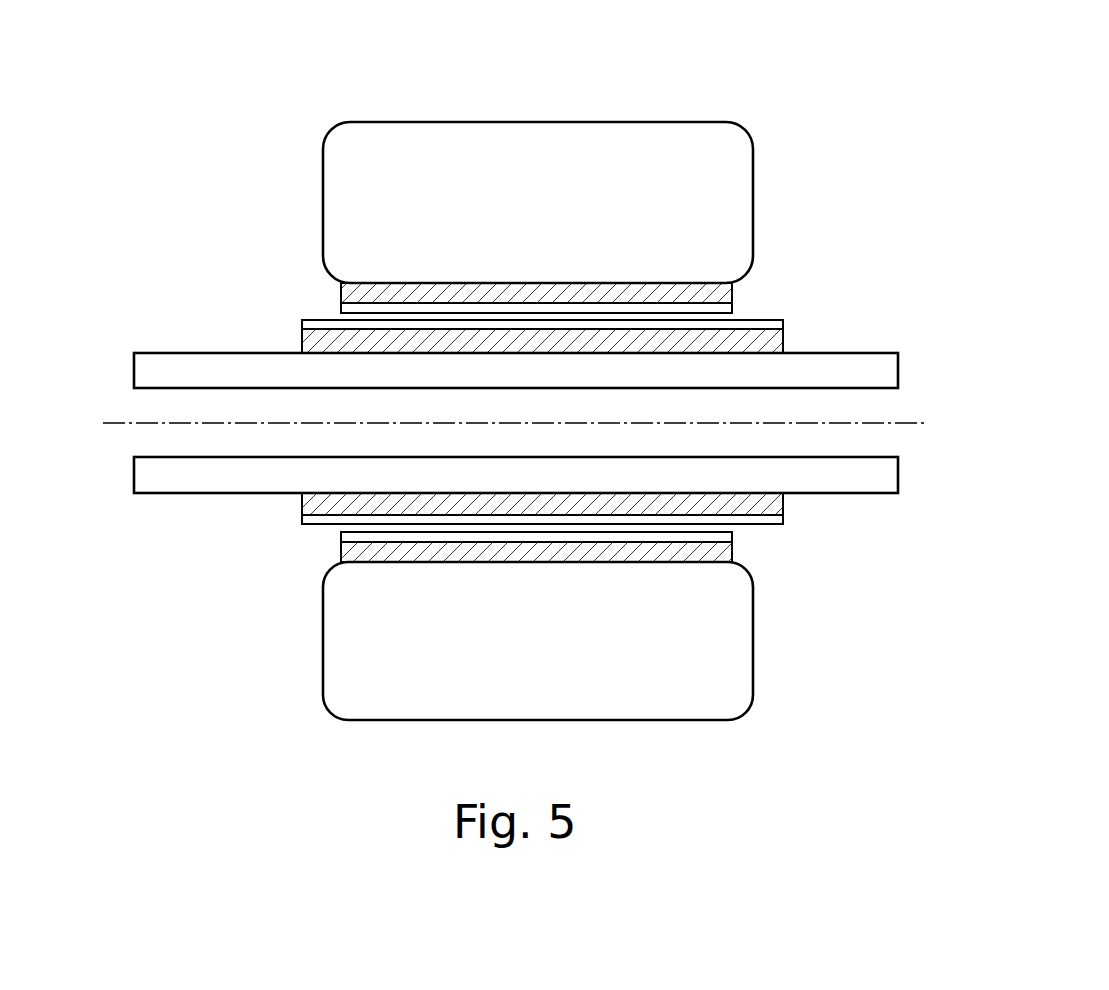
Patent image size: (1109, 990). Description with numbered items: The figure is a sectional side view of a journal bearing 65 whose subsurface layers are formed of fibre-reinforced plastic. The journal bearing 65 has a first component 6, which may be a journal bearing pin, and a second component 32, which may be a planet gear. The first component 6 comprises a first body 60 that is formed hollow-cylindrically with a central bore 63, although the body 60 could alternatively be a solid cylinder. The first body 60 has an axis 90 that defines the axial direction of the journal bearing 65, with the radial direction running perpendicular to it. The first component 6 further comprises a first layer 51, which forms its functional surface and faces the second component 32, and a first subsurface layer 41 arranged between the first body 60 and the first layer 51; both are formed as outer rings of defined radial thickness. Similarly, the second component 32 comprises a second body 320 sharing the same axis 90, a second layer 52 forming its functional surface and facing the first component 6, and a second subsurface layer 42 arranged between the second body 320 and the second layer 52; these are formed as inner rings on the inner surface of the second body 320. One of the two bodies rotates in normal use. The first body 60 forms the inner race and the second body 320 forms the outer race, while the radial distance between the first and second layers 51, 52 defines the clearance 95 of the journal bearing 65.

The second body 320 is at (540, 200).
The second component 32 is at (316, 208).
The journal bearing 65 is at (777, 95).
The second subsurface layer 42 is at (540, 297).
The first subsurface layer 41 is at (540, 342).
The second layer 52 is at (735, 312).
The first layer 51 is at (716, 326).
The clearance 95 is at (341, 312).
The first component 6 is at (203, 341).
The central bore 63 is at (152, 408).
The first body 60 is at (538, 368).
The axis 90 is at (908, 423).